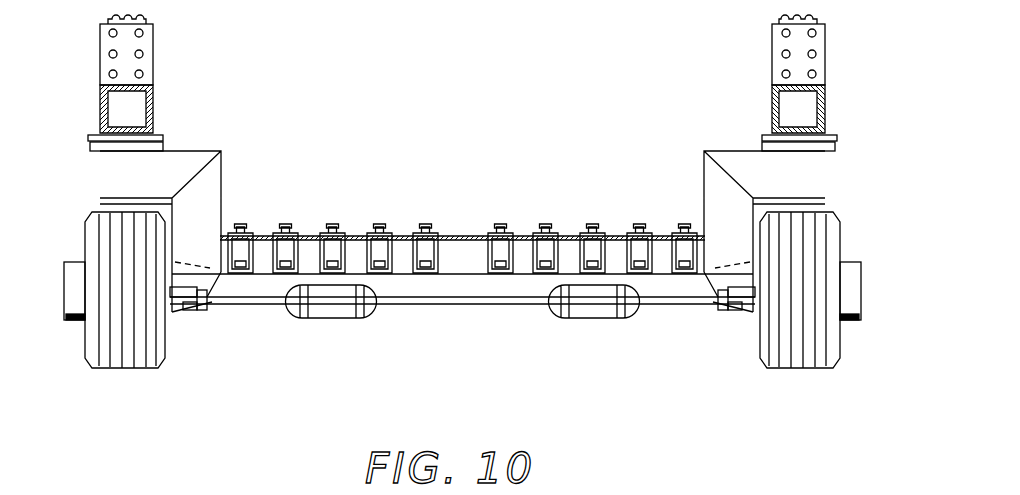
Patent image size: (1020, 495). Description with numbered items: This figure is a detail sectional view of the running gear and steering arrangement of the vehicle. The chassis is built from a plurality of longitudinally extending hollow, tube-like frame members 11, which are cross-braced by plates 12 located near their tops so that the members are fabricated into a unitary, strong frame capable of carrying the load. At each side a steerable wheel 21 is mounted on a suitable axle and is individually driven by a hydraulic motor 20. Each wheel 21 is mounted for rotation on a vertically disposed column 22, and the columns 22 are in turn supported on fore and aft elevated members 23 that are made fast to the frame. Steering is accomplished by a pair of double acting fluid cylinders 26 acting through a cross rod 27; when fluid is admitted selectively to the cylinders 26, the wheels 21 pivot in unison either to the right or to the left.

The frame members 11 is at (277, 233).
The plates 12 is at (523, 237).
The hydraulic motors 20 is at (178, 313).
The steerable wheels 21 is at (132, 355).
The vertically disposed columns 22 is at (141, 44).
The elevated members 23 is at (153, 100).
The double acting fluid cylinders 26 is at (346, 318).
The cross rod 27 is at (458, 305).